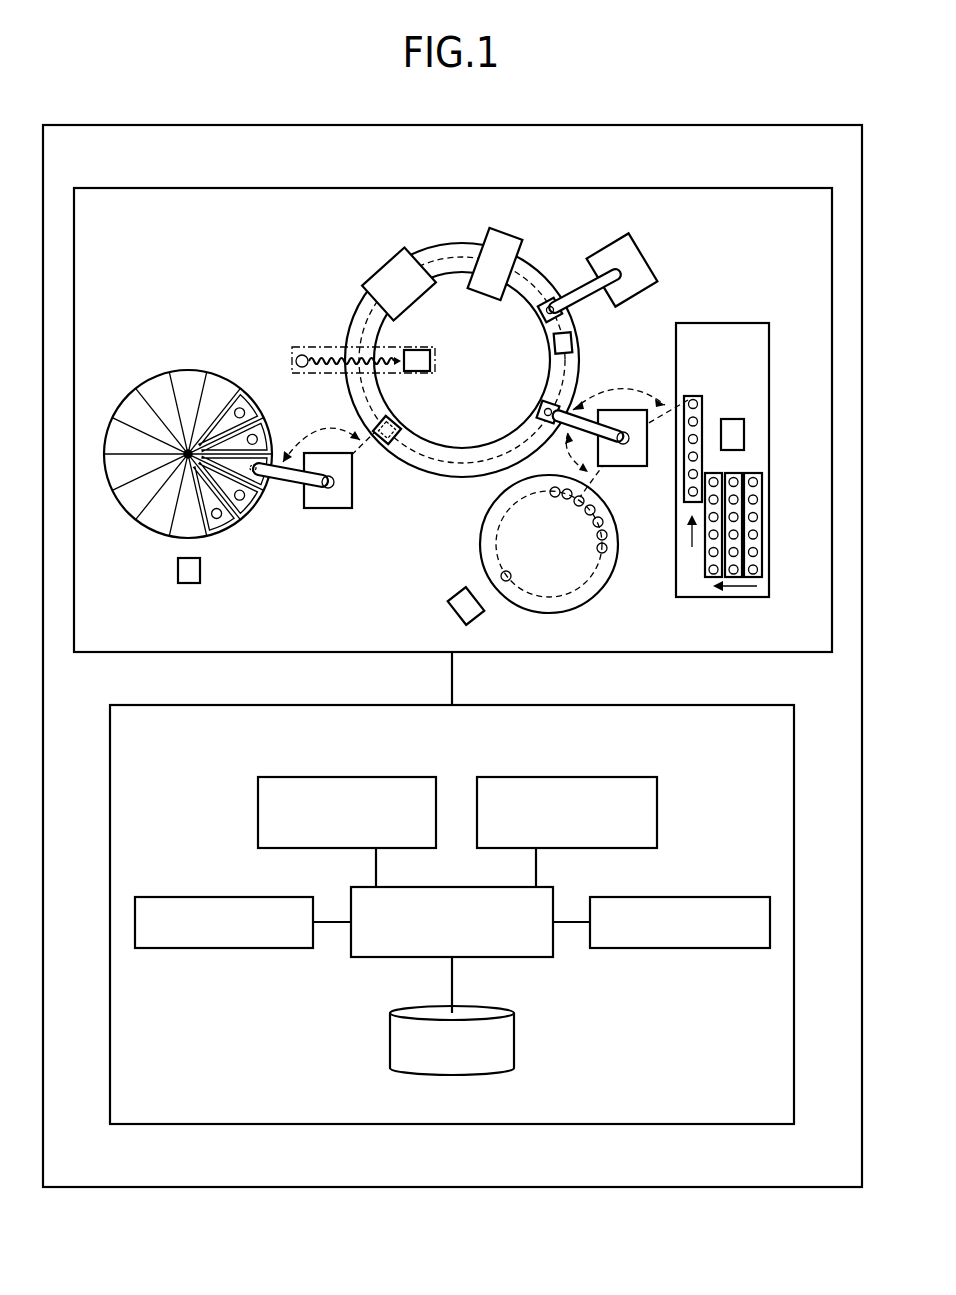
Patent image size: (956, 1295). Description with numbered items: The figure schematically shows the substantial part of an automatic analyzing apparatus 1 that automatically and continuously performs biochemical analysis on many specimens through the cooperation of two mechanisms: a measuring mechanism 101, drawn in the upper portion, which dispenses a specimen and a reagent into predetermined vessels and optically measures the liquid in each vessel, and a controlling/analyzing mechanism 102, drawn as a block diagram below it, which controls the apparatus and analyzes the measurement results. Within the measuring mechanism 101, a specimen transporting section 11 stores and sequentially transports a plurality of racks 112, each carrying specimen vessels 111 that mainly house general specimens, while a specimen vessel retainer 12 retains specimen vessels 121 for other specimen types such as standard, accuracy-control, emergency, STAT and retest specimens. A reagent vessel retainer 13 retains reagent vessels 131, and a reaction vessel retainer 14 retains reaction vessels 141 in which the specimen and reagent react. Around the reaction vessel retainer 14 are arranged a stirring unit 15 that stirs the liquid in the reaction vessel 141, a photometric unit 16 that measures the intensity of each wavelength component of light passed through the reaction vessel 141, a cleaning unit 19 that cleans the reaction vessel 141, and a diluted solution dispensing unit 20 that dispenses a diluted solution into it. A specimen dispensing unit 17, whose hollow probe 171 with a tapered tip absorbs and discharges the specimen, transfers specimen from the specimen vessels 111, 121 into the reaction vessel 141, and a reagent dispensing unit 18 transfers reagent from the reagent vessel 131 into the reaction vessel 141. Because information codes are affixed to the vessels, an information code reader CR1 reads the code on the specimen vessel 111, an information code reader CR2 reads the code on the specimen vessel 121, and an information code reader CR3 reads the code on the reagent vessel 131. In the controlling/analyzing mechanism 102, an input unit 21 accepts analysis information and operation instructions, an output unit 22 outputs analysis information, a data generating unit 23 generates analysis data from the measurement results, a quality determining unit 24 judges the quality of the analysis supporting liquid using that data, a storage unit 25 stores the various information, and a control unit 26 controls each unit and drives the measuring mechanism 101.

The automatic analyzing apparatus 1 is at (812, 126).
The measuring mechanism 101 is at (785, 189).
The controlling/analyzing mechanism 102 is at (694, 705).
The specimen transporting section 11 is at (738, 324).
The specimen vessel 111 is at (700, 400).
The rack 112 is at (763, 532).
The specimen vessel retainer 12 is at (598, 596).
The specimen vessel 121 is at (608, 546).
The reagent vessel retainer 13 is at (124, 511).
The reagent vessel 131 is at (258, 516).
The reaction vessel retainer 14 is at (457, 438).
The reaction vessel 141 is at (575, 340).
The stirring unit 15 is at (504, 236).
The photometric unit 16 is at (292, 352).
The specimen dispensing unit 17 is at (626, 466).
The probe 171 is at (538, 410).
The reagent dispensing unit 18 is at (310, 508).
The cleaning unit 19 is at (381, 266).
The diluted solution dispensing unit 20 is at (646, 254).
The input unit 21 is at (166, 896).
The output unit 22 is at (738, 896).
The data generating unit 23 is at (290, 776).
The quality determining unit 24 is at (498, 776).
The storage unit 25 is at (518, 1042).
The control unit 26 is at (375, 960).
The information code reader CR1 is at (746, 434).
The information code reader CR2 is at (452, 598).
The information code reader CR3 is at (201, 571).